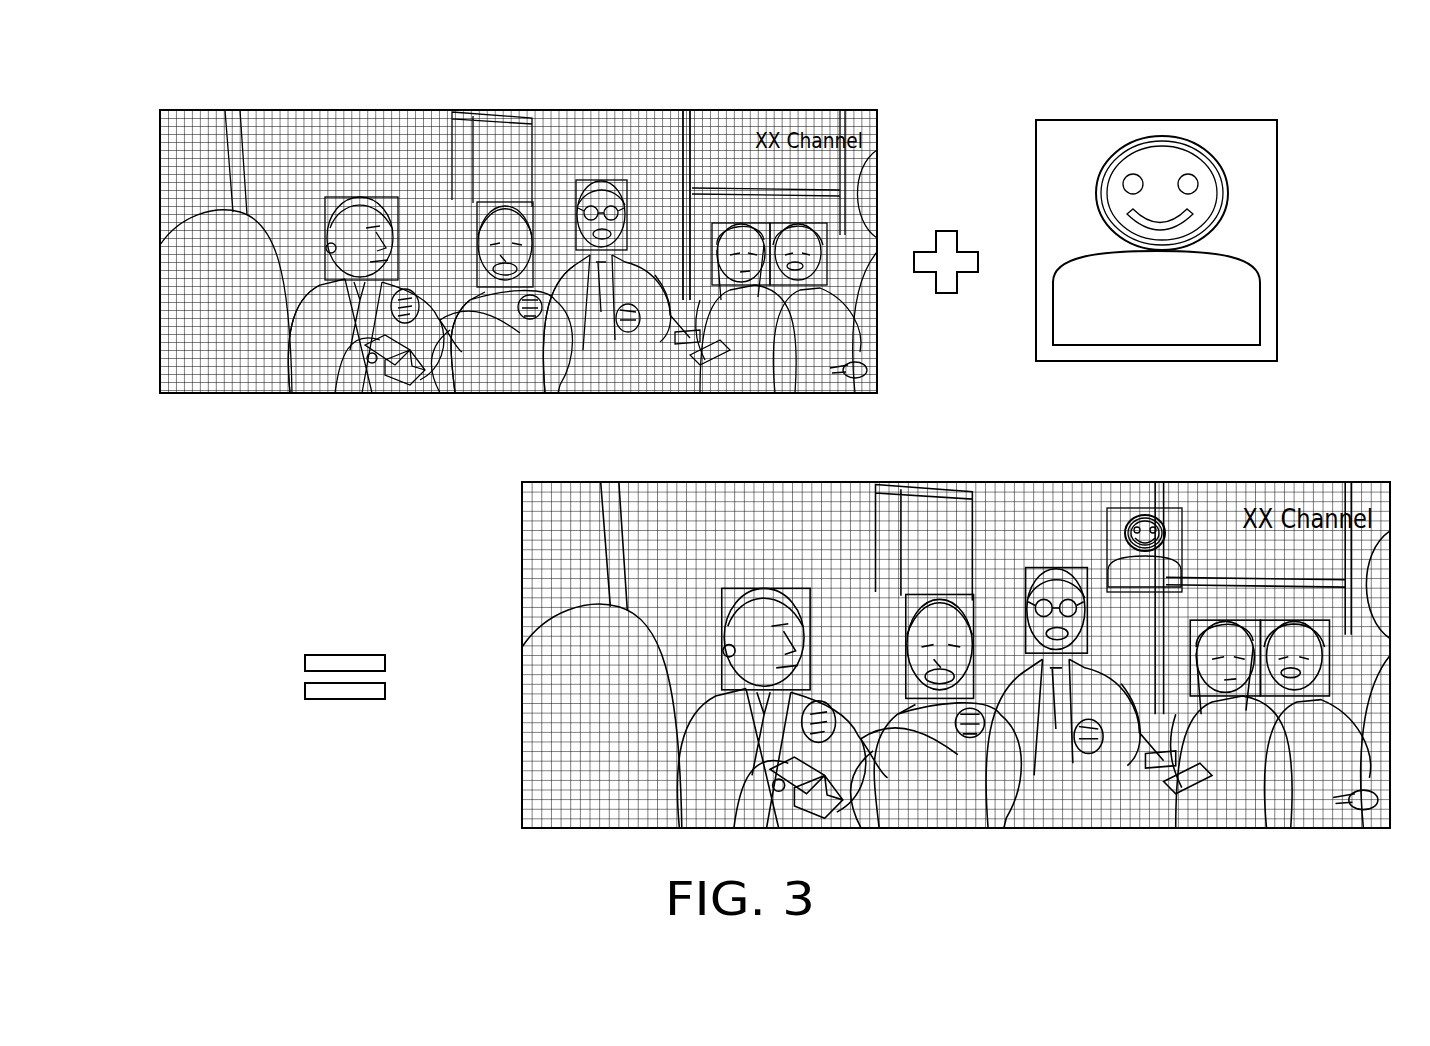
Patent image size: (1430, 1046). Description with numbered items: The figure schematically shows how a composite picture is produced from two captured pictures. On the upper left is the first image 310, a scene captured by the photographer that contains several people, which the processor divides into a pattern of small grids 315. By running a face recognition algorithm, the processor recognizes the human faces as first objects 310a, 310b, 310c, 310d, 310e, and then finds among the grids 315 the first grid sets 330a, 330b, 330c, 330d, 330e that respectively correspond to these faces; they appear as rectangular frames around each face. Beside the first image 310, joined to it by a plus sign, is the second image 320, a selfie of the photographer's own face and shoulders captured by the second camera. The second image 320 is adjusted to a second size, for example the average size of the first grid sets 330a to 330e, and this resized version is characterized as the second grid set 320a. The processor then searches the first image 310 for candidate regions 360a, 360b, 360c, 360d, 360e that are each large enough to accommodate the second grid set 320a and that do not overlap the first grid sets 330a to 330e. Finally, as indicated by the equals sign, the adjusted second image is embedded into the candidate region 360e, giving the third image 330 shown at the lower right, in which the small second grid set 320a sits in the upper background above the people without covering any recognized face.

The first image 310 is at (172, 92).
The grids 315 is at (268, 118).
The first object 310a is at (338, 196).
The first object 310b is at (478, 205).
The first object 310c is at (595, 182).
The first object 310d is at (738, 222).
The first object 310e is at (800, 222).
The first grid set 330a is at (392, 197).
The first grid set 330b is at (497, 202).
The first grid set 330c is at (624, 180).
The first grid set 330d is at (767, 223).
The first grid set 330e is at (828, 223).
The candidate region 360a is at (175, 165).
The candidate region 360b is at (312, 360).
The candidate region 360c is at (505, 375).
The candidate region 360d is at (640, 370).
The candidate region 360e is at (658, 167).
The second image 320 is at (1280, 166).
The second grid set 320a is at (1104, 522).
The third image 330 is at (1302, 462).